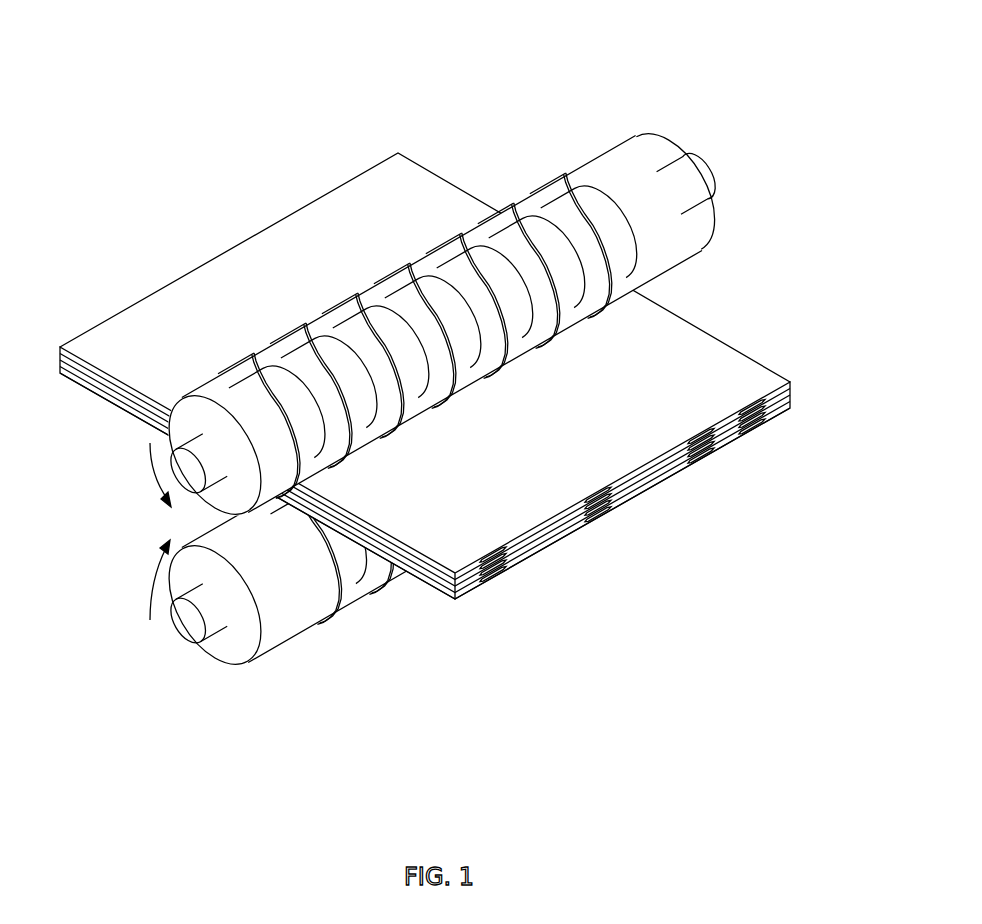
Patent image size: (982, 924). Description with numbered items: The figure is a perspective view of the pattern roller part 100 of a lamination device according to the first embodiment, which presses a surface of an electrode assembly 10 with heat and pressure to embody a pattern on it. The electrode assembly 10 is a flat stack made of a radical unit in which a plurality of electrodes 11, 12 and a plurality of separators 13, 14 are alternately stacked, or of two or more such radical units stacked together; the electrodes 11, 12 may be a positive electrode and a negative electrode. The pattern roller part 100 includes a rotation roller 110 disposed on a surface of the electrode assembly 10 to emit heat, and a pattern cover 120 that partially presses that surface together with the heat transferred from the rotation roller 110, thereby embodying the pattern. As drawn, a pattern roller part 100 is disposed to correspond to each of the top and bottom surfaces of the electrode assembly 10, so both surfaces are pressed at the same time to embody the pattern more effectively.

The electrode assembly 10 is at (436, 376).
The electrode 11 is at (567, 512).
The electrode 12 is at (580, 512).
The separator 13 is at (620, 495).
The separator 14 is at (675, 470).
The pattern roller part 100 is at (433, 276).
The rotation roller 110 is at (640, 158).
The pattern cover 120 is at (640, 66).